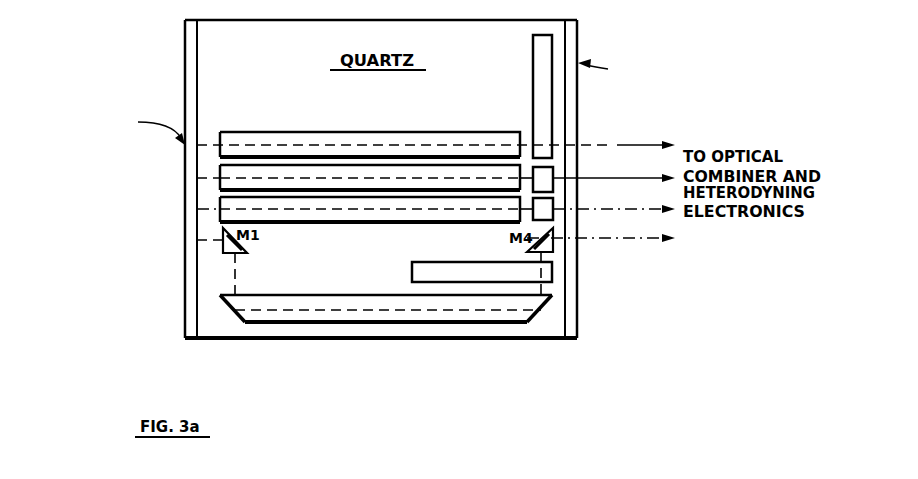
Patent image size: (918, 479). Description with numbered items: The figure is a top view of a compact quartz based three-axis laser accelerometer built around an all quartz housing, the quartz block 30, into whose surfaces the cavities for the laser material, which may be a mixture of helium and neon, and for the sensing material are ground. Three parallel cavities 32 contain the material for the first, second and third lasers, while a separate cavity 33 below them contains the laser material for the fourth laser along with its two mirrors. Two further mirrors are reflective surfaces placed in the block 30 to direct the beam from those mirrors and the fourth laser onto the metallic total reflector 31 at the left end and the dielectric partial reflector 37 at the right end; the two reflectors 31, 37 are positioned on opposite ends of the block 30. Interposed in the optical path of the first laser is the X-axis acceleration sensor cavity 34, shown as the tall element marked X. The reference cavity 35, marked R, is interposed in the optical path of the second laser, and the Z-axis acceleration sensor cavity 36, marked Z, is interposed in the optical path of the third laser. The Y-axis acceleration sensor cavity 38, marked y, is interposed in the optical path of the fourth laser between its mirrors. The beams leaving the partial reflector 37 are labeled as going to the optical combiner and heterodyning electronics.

The quartz block 30 is at (497, 358).
The metallic total reflector 31 is at (201, 65).
The cavities 32 is at (431, 134).
The cavity 33 is at (343, 320).
The X-axis acceleration sensor cavity 34 is at (540, 55).
The reference cavity 35 is at (553, 172).
The Z-axis acceleration sensor cavity 36 is at (555, 211).
The dielectric partial reflector 37 is at (572, 262).
The Y-axis acceleration sensor cavity 38 is at (432, 273).